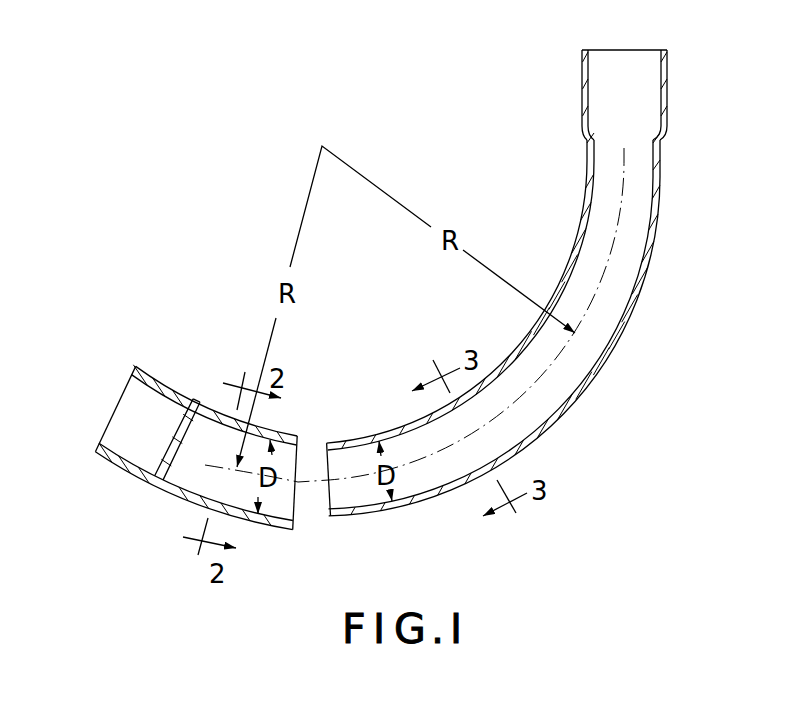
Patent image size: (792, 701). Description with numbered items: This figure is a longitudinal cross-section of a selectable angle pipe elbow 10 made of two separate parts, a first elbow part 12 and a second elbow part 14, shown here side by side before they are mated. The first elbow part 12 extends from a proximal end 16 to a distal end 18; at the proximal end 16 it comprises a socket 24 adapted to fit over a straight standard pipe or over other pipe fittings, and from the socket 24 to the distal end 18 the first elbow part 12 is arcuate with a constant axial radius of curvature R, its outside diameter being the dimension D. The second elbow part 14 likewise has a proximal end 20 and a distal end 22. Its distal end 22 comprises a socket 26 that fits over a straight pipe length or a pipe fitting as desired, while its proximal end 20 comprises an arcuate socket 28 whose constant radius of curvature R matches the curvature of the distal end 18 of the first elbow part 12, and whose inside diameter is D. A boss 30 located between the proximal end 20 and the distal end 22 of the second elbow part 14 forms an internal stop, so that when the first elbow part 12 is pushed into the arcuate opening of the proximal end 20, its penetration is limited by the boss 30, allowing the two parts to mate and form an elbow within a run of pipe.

The selectable angle pipe elbow 10 is at (453, 127).
The first elbow part 12 is at (614, 343).
The second elbow part 14 is at (163, 497).
The proximal end 16 is at (628, 57).
The distal end 18 is at (331, 519).
The proximal end 20 is at (287, 534).
The distal end 22 is at (132, 408).
The socket 24 is at (668, 88).
The socket 26 is at (152, 372).
The arcuate socket 28 is at (296, 452).
The boss 30 is at (197, 403).